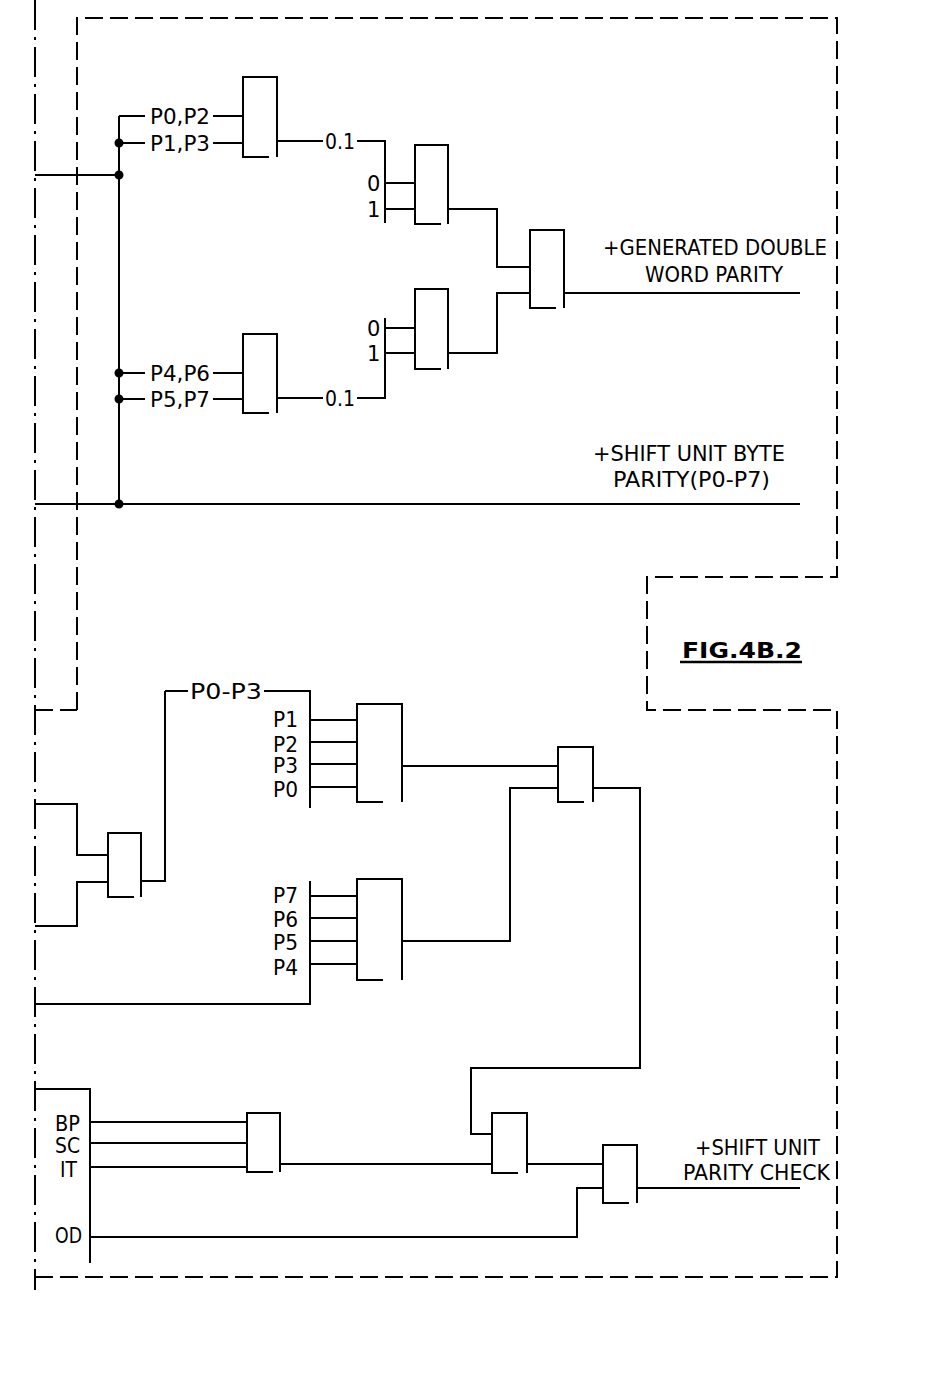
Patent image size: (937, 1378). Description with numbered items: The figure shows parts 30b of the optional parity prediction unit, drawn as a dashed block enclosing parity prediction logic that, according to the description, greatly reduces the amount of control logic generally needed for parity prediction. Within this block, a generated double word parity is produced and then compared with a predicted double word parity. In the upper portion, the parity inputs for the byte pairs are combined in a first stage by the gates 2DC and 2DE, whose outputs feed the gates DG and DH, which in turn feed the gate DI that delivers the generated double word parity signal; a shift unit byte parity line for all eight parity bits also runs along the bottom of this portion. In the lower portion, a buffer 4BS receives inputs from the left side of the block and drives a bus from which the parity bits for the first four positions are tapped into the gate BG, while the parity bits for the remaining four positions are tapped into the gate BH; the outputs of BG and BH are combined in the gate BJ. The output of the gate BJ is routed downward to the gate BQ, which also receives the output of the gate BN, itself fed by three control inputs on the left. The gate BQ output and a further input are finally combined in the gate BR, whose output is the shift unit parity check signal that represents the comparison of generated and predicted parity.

The parts of the optional parity prediction unit 30b is at (708, 112).
The exclusive-OR gate 2DC is at (275, 118).
The exclusive-OR gate 2DE is at (275, 374).
The exclusive-OR gate DG is at (441, 185).
The exclusive-OR gate DH is at (441, 330).
The exclusive-OR gate DI is at (557, 270).
The odd parity gate BG is at (392, 753).
The odd parity gate BH is at (392, 929).
The exclusive-OR gate BJ is at (588, 776).
The buffer 4BS is at (141, 873).
The odd parity gate BN is at (277, 1141).
The odd parity gate BQ is at (523, 1142).
The exclusive-OR gate BR is at (634, 1175).